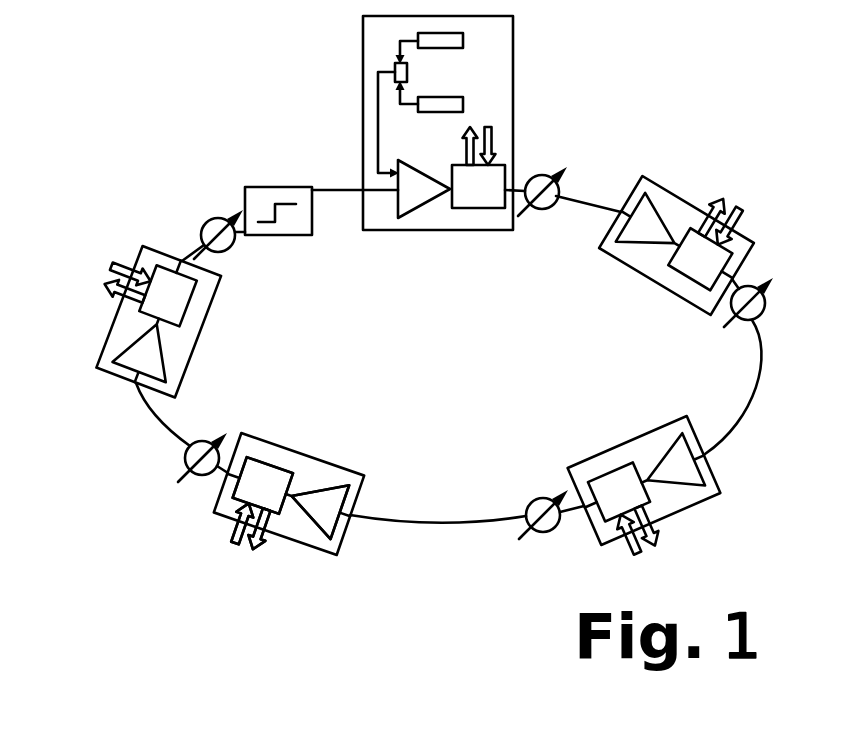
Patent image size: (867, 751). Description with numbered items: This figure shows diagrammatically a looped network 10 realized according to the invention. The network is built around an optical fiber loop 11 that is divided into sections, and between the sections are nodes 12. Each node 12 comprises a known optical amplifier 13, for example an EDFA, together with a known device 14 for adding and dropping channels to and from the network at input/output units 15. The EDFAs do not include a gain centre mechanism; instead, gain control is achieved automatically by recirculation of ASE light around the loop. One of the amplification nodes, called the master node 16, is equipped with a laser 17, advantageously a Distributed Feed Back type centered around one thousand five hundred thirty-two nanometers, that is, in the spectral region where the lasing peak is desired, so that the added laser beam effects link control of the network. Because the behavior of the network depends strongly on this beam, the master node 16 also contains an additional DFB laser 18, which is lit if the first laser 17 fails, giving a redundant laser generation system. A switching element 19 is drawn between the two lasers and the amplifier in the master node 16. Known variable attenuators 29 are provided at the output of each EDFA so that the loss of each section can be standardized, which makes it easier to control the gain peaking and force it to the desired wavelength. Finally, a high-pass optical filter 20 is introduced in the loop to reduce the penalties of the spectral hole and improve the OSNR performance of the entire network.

The looped network 10 is at (698, 66).
The optical fiber loop 11 is at (765, 356).
The nodes 12 is at (647, 277).
The optical amplifiers 13 is at (422, 202).
The devices for adding and dropping channels 14 is at (468, 208).
The input/output units 15 is at (517, 132).
The master node 16 is at (363, 100).
The laser 17 is at (463, 36).
The additional DFB laser 18 is at (463, 104).
The switch 19 is at (393, 62).
The high-pass optical filter 20 is at (248, 188).
The Variable Attenuators 29 is at (202, 228).